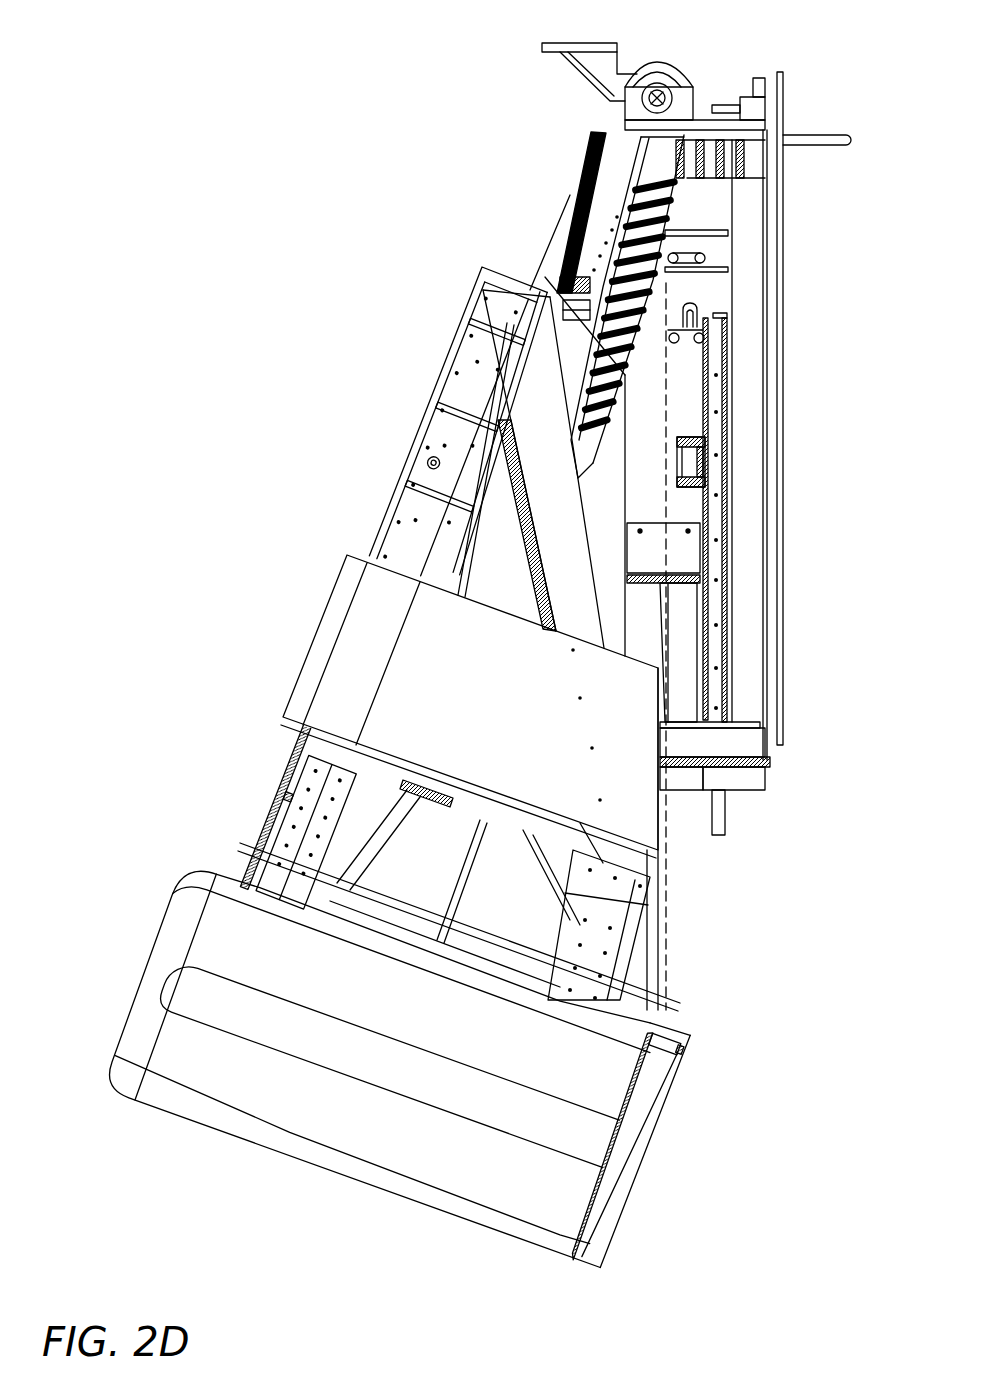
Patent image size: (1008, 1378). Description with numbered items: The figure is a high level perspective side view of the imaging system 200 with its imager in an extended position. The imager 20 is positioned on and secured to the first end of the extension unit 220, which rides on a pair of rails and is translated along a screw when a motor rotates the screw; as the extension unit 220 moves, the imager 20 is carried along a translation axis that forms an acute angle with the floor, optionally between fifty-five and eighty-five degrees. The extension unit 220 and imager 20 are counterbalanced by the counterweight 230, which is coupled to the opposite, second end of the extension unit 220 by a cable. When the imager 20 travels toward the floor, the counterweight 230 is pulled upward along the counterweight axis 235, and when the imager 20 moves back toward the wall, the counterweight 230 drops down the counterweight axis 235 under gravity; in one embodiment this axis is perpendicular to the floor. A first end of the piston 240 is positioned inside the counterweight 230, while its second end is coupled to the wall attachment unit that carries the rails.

The imaging system 200 is at (330, 12).
The imager 20 is at (588, 1177).
The extension unit 220 is at (393, 498).
The counterweight 230 is at (695, 373).
The counterweight axis 235 is at (665, 500).
The piston 240 is at (678, 645).